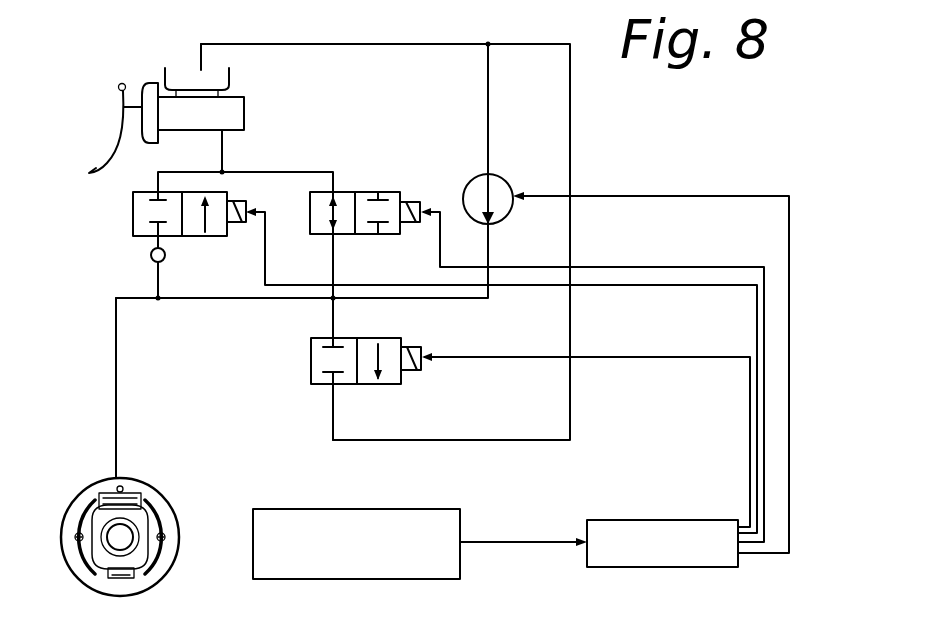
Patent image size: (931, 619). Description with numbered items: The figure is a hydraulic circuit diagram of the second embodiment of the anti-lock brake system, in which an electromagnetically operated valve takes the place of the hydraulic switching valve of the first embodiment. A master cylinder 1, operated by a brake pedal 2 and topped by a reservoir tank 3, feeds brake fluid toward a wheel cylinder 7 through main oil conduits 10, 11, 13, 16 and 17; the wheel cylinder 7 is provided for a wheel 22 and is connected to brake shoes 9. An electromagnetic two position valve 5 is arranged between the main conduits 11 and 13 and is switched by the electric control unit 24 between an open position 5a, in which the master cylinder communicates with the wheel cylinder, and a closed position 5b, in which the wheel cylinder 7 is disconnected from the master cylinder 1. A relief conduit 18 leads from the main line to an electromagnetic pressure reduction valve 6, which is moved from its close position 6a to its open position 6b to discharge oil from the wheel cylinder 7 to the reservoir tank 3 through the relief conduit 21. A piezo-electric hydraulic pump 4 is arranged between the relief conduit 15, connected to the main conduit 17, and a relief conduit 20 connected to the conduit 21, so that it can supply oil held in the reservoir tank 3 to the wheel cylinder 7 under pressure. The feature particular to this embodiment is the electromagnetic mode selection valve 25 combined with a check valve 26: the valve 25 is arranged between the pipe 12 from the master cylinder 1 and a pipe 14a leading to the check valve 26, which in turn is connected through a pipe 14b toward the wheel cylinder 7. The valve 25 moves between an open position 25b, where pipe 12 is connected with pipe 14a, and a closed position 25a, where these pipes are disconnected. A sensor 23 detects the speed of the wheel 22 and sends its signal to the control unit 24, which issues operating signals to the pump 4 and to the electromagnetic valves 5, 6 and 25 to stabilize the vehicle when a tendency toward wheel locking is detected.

The master cylinder 1 is at (244, 109).
The brake pedal 2 is at (100, 159).
The reservoir tank 3 is at (182, 72).
The piezo-electric hydraulic pump 4 is at (507, 182).
The electromagnetic two position valve 5 is at (521, 346).
The open position 5a is at (346, 192).
The closed position 5b is at (390, 192).
The electromagnetic pressure reduction valve 6 is at (509, 418).
The close position 6a is at (320, 345).
The open position 6b is at (398, 346).
The wheel cylinder 7 is at (150, 492).
The brake shoes 9 is at (84, 516).
The main oil conduit 10 is at (223, 150).
The main oil conduit 11 is at (322, 170).
The pipe 12 is at (165, 172).
The main oil conduit 13 is at (335, 259).
The pipe 14a is at (172, 242).
The pipe 14b is at (160, 282).
The relief conduit 15 is at (464, 299).
The main oil conduit 16 is at (192, 299).
The main hydraulic pressure conduit 17 is at (117, 389).
The relief conduit 18 is at (334, 314).
The relief conduit 20 is at (489, 103).
The relief conduit 21 is at (428, 44).
The wheel 22 is at (129, 518).
The sensor 23 is at (412, 509).
The electric control unit 24 is at (676, 520).
The electromagnetic mode selection valve 25 is at (183, 214).
The closed position 25a is at (133, 197).
The open position 25b is at (228, 199).
The check valve 26 is at (150, 262).